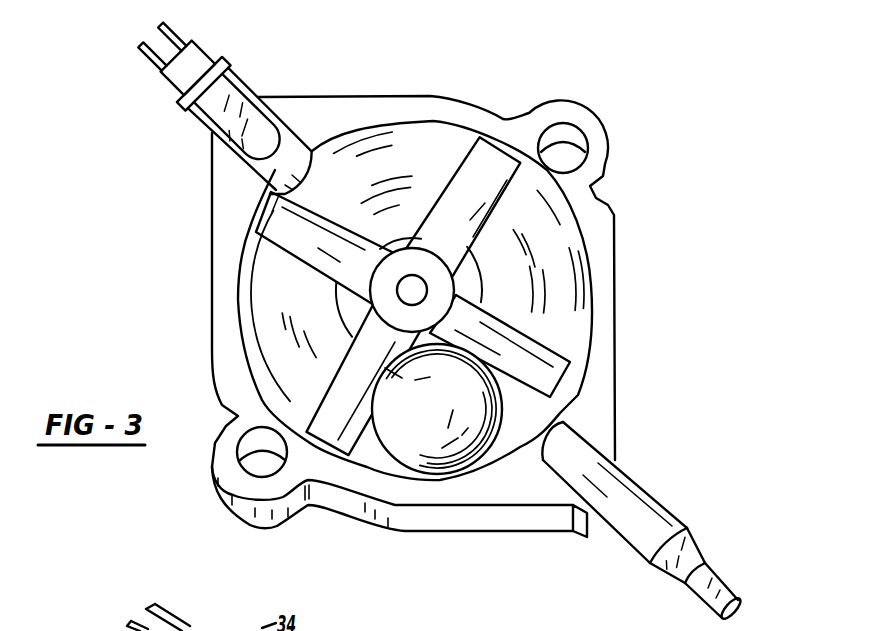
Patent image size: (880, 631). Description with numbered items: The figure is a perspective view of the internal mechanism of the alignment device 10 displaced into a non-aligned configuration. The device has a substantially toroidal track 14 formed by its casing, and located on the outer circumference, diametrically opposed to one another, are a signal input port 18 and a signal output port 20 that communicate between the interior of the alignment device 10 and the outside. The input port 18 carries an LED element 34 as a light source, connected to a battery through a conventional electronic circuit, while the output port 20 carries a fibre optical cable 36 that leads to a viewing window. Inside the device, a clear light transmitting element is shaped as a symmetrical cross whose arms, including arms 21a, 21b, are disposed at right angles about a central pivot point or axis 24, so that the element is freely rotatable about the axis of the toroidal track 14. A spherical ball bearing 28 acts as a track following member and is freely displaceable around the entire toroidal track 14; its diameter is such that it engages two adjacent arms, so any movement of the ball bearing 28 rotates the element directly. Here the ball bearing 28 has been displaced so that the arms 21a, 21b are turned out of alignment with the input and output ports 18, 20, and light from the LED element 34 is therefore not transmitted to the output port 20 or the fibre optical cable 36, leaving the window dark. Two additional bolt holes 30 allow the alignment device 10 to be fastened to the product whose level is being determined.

The alignment device 10 is at (650, 89).
The toroidal track 14 is at (537, 275).
The signal input port 18 is at (280, 170).
The signal output port 20 is at (563, 419).
The arm 21a is at (298, 233).
The arm 21b is at (532, 353).
The central pivot point or axis 24 is at (406, 291).
The spherical ball bearing 28 is at (420, 428).
The bolt hole 30 is at (546, 138).
The LED element 34 is at (246, 112).
The fibre optical cable 36 is at (703, 583).